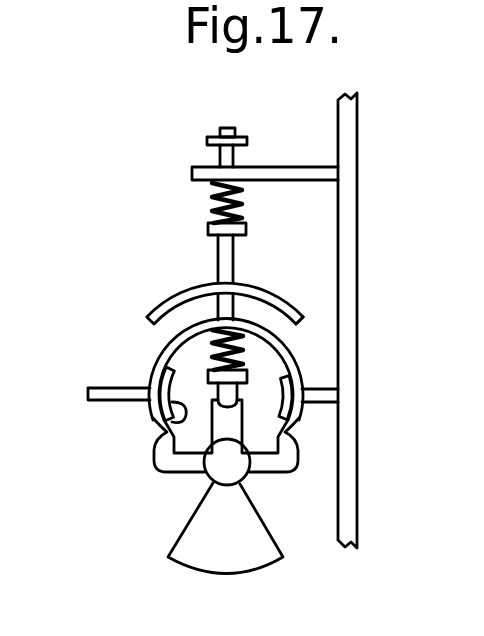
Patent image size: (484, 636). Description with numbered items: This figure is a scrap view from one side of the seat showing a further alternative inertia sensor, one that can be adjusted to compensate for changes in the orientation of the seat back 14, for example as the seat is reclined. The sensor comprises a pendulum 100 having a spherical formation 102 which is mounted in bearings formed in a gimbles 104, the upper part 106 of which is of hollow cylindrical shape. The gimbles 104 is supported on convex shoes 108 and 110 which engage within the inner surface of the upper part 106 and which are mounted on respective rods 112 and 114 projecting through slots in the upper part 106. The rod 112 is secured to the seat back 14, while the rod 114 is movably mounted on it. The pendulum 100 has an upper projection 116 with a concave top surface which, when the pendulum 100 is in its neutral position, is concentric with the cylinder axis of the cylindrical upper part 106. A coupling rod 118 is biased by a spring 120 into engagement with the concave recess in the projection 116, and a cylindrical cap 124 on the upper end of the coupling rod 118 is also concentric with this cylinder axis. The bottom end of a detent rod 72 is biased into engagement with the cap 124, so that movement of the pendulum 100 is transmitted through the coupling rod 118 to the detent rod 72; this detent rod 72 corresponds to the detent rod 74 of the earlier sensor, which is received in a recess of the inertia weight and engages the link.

The seat back 14 is at (348, 331).
The detent rod 72 is at (222, 251).
The detent rod 74 is at (222, 205).
The pendulum 100 is at (200, 527).
The spherical formation 102 is at (217, 460).
The gimbles 104 is at (278, 462).
The upper part 106 is at (155, 362).
The convex shoe 108 is at (287, 360).
The convex shoe 110 is at (172, 424).
The rod 112 is at (323, 395).
The rod 114 is at (90, 397).
The upper projection 116 is at (213, 430).
The coupling rod 118 is at (270, 283).
The spring 120 is at (218, 357).
The cylindrical cap 124 is at (298, 310).